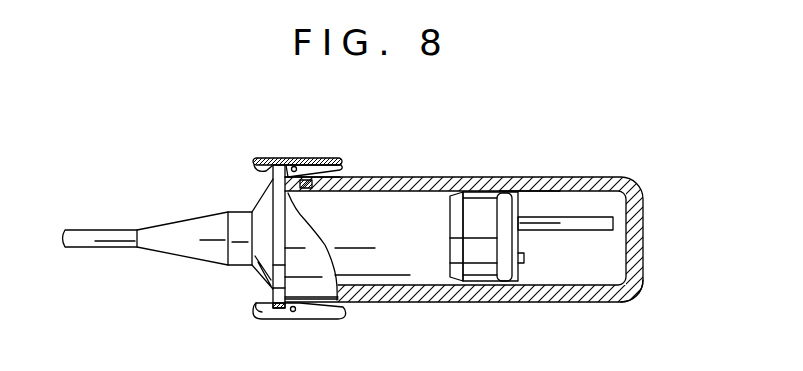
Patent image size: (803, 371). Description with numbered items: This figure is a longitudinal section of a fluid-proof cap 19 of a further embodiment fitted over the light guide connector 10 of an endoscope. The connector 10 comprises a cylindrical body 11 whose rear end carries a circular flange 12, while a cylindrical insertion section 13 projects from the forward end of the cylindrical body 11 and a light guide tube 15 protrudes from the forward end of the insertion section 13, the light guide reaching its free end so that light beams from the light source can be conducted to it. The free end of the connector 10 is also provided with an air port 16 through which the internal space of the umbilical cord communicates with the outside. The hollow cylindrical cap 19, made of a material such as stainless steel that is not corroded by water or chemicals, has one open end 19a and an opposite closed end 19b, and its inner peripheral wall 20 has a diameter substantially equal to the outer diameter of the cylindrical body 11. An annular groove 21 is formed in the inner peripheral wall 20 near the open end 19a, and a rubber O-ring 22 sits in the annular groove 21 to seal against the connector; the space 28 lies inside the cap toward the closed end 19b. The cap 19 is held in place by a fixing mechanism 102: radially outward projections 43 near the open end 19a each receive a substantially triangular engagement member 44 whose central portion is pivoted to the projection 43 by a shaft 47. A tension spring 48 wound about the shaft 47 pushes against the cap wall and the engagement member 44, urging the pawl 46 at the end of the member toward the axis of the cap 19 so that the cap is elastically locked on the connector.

The connector 10 is at (237, 272).
The cylindrical body 11 is at (405, 197).
The circular flange 12 is at (274, 291).
The cylindrical insertion section 13 is at (483, 255).
The light guide tube 15 is at (595, 222).
The air port 16 is at (524, 258).
The fluid-proof cap 19 is at (557, 181).
The open end 19a is at (268, 186).
The closed end 19b is at (637, 231).
The inner peripheral wall 20 is at (532, 196).
The annular groove 21 is at (310, 182).
The O-ring 22 is at (306, 189).
The rear chamber 28 is at (590, 267).
The projection 43 is at (283, 165).
The engagement member 44 is at (268, 159).
The pawl 46 is at (260, 168).
The shaft 47 is at (315, 229).
The tension spring 48 is at (318, 164).
The mechanism for fixing fluid-proof cap 102 is at (271, 231).